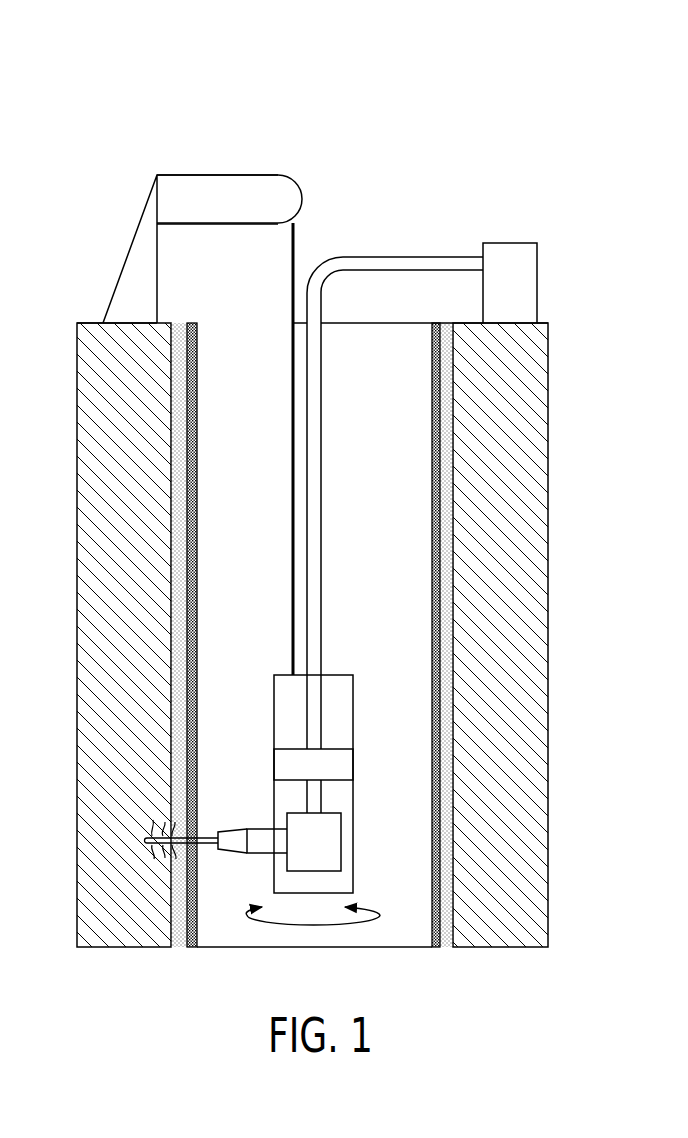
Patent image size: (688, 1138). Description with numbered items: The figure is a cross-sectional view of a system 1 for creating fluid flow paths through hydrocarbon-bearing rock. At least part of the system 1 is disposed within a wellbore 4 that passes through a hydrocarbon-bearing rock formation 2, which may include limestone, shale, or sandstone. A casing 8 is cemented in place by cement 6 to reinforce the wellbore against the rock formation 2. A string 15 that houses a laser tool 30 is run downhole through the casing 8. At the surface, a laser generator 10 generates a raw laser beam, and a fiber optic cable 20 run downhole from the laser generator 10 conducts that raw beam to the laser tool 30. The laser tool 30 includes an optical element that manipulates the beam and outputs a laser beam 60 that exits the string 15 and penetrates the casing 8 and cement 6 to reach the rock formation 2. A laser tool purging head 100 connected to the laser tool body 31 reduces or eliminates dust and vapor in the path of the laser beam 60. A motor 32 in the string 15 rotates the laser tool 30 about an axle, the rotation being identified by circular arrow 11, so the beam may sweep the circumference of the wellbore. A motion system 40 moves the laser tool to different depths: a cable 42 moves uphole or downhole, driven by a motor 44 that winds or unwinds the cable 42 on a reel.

The system 1 is at (442, 98).
The hydrocarbon-bearing rock formation 2 is at (532, 450).
The wellbore 4 is at (253, 342).
The cement 6 is at (448, 512).
The casing 8 is at (437, 568).
The laser generator 10 is at (528, 292).
The circular arrow 11 is at (370, 920).
The string 15 is at (340, 712).
The fiber optic cable 20 is at (322, 492).
The laser tool 30 is at (342, 825).
The laser tool body 31 is at (333, 860).
The motor 32 is at (340, 765).
The motion system 40 is at (112, 179).
The cable 42 is at (296, 230).
The motor 44 is at (283, 190).
The laser beam 60 is at (203, 848).
The laser tool purging head 100 is at (232, 838).